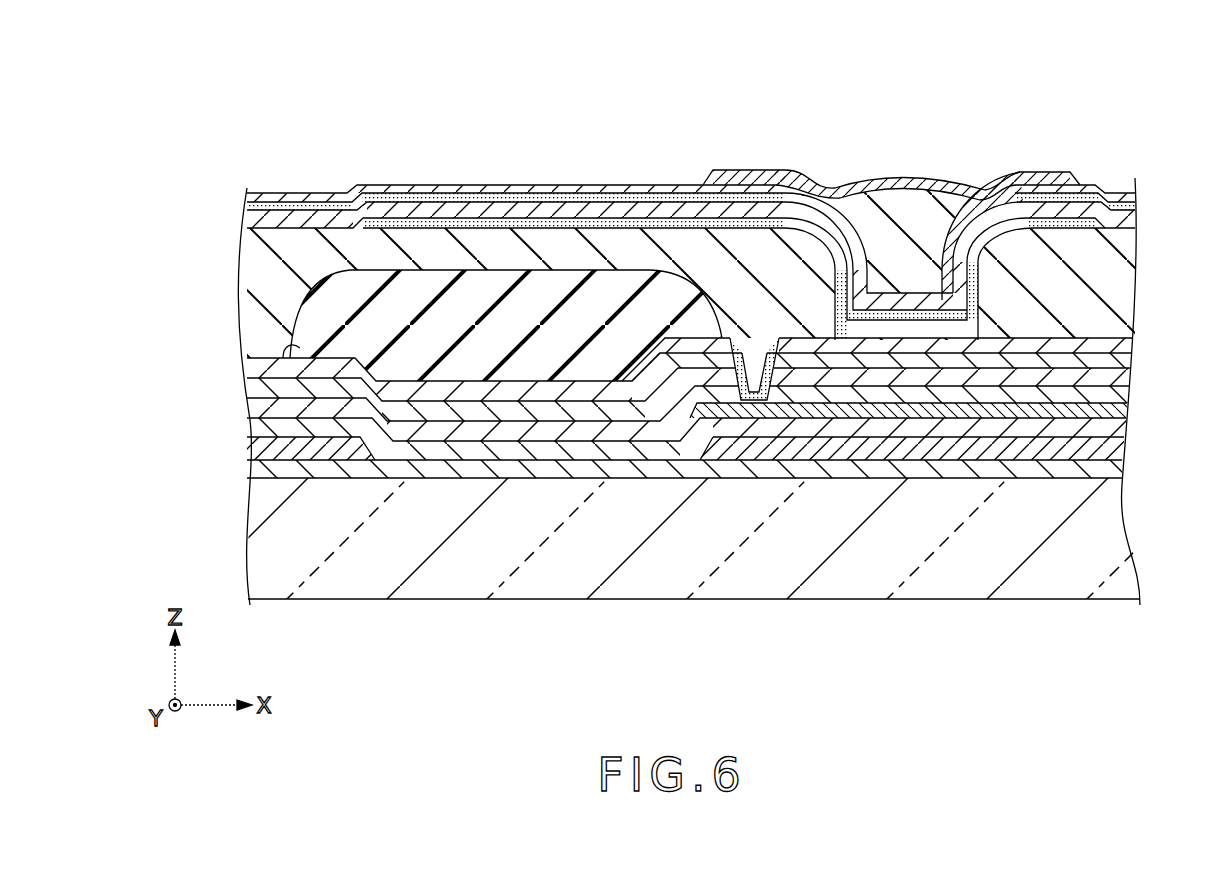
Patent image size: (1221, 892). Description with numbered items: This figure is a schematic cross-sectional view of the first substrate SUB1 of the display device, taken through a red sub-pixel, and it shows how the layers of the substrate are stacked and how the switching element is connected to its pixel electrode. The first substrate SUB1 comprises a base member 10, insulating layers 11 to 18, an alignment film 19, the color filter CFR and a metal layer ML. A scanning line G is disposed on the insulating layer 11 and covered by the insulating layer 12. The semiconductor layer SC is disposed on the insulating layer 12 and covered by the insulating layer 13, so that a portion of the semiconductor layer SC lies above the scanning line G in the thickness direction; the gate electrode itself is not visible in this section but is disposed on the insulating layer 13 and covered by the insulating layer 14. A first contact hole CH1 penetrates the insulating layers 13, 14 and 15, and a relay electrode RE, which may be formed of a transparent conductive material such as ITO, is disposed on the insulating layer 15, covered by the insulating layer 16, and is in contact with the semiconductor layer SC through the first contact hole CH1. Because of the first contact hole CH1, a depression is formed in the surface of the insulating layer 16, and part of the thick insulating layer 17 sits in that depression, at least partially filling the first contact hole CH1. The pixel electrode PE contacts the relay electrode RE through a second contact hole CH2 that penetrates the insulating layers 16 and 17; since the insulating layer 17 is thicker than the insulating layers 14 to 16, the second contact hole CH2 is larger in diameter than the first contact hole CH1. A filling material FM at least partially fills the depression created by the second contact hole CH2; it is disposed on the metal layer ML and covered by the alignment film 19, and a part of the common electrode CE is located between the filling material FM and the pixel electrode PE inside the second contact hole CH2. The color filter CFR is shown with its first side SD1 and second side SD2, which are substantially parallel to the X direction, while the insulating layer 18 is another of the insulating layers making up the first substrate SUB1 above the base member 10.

The first substrate SUB1 is at (1078, 140).
The insulating substrate 10 is at (1124, 531).
The insulating layer 11 is at (1122, 467).
The insulating layer 12 is at (1124, 434).
The insulating layer 13 is at (1127, 404).
The insulating layer 14 is at (1129, 380).
The insulating layer 15 is at (1131, 360).
The insulating layer 16 is at (1133, 343).
The insulating layer 17 is at (1122, 283).
The insulating layer 18 is at (1122, 221).
The alignment film 19 is at (607, 185).
The scanning line G is at (328, 462).
The semiconductor layer SC is at (850, 420).
The first side SD1 is at (724, 337).
The second side SD2 is at (296, 355).
The relay electrode RE is at (803, 340).
The first contact hole CH1 is at (757, 375).
The second contact hole CH2 is at (900, 240).
The color filter CFR is at (444, 274).
The pixel electrode PE is at (511, 220).
The common electrode CE is at (404, 190).
The metal layer ML is at (757, 170).
The filling material FM is at (960, 215).